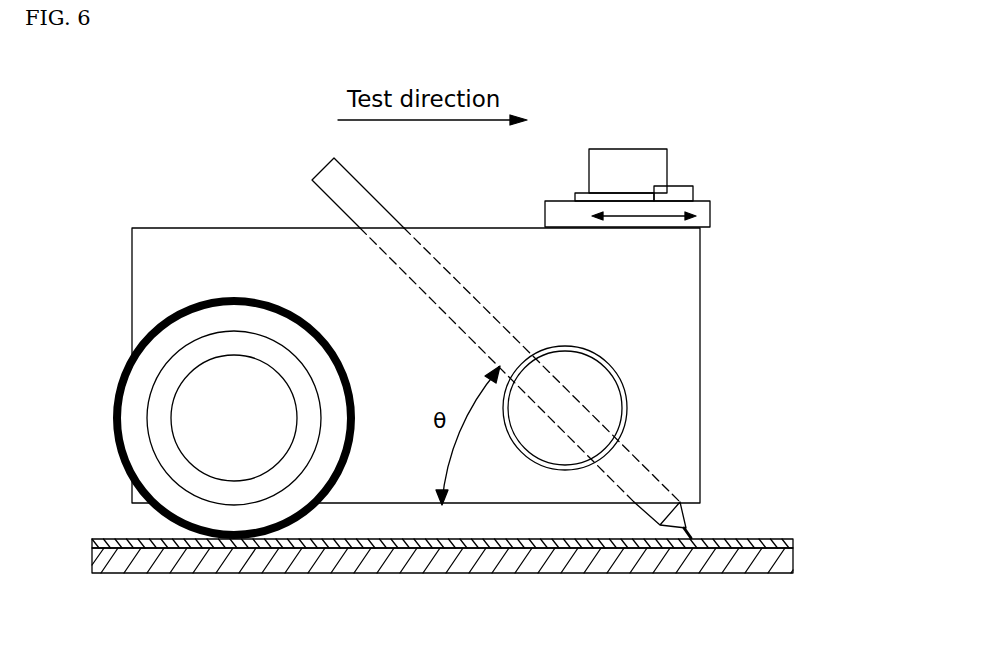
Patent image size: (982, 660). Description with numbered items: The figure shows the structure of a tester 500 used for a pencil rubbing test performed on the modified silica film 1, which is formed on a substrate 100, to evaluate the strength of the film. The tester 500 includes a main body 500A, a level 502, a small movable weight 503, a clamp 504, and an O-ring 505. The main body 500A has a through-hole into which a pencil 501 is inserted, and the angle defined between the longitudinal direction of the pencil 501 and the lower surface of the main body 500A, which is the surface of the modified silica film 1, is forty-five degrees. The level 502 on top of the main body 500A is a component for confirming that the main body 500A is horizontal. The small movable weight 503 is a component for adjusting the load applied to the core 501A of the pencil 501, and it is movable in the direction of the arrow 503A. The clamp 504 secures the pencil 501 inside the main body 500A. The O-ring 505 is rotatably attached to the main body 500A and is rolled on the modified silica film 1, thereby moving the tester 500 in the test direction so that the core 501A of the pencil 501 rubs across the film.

The modified silica film 1 is at (782, 538).
The substrate 100 is at (743, 563).
The tester 500 is at (762, 341).
The main body 500A is at (700, 270).
The pencil 501 is at (376, 202).
The core 501A is at (693, 532).
The level 502 is at (632, 160).
The small movable weight 503 is at (702, 209).
The arrow 503A is at (675, 213).
The clamp 504 is at (628, 398).
The O-ring 505 is at (120, 388).